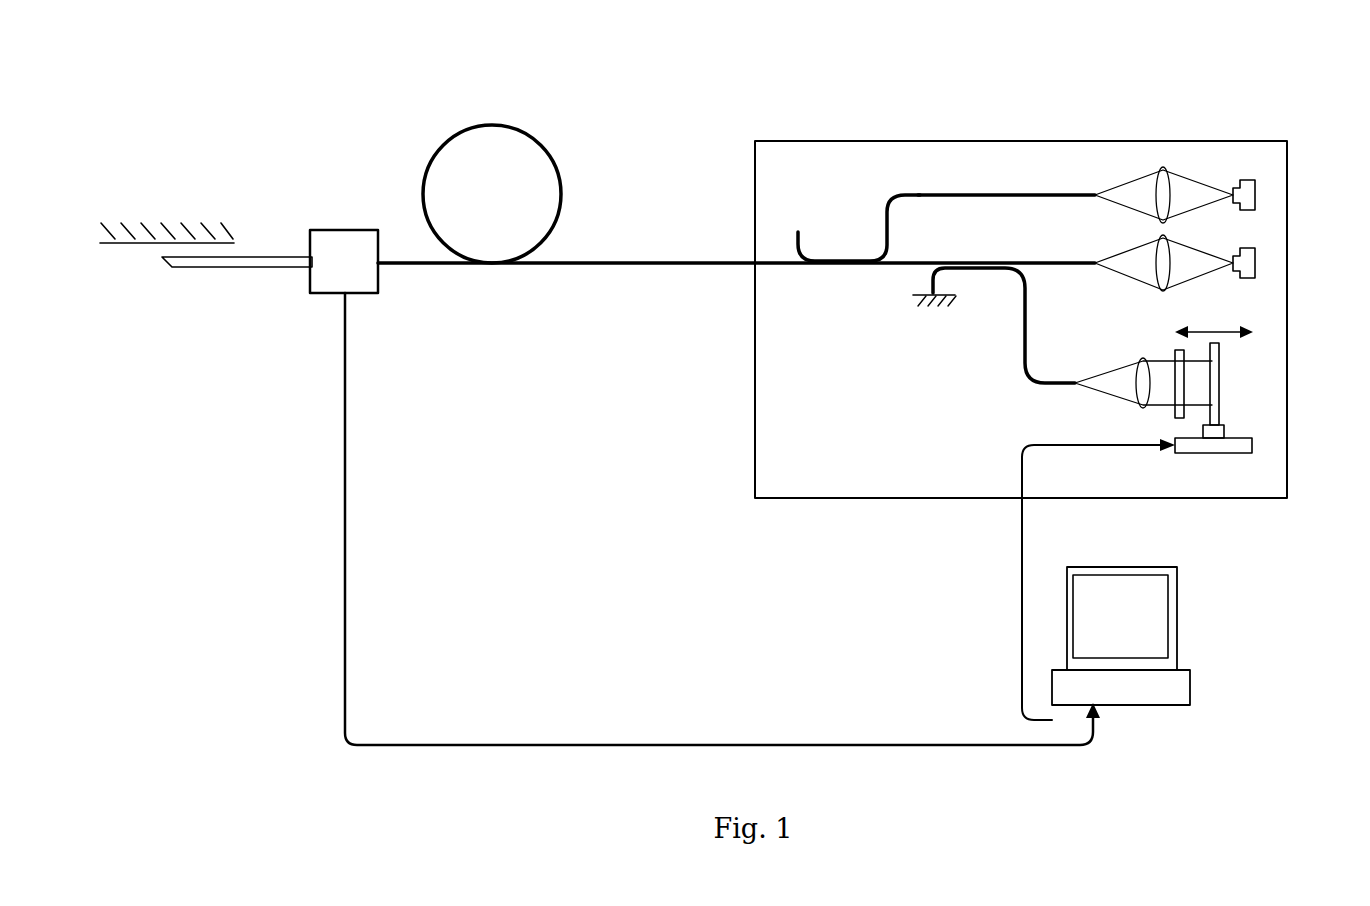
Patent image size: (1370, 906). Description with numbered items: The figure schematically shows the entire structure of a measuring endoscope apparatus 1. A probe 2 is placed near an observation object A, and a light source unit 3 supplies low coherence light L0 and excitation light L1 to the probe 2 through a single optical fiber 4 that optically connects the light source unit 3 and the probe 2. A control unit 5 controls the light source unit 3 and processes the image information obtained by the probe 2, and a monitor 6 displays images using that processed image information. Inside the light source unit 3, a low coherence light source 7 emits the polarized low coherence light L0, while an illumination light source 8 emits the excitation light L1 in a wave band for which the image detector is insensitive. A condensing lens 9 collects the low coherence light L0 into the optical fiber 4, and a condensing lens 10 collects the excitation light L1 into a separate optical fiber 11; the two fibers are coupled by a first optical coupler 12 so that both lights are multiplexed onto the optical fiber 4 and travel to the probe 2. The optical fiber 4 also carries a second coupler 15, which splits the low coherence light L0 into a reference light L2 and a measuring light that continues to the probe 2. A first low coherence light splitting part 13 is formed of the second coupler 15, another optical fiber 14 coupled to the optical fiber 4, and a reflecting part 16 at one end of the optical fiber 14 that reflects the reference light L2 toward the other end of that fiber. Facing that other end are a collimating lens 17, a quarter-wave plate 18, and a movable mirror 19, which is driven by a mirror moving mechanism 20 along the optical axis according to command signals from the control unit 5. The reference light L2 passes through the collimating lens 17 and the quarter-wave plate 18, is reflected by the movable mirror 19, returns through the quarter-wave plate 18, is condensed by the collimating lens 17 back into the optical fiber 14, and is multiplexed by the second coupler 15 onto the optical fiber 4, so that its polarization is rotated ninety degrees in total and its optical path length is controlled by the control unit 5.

The measuring endoscope apparatus 1 is at (782, 66).
The probe 2 is at (258, 268).
The light source unit 3 is at (1046, 140).
The optical fiber 4 is at (640, 266).
The control unit 5 is at (1157, 696).
The monitor 6 is at (1177, 606).
The low coherence light source 7 is at (1250, 266).
The illumination light source 8 is at (1246, 180).
The condensing lens 9 is at (1160, 242).
The condensing lens 10 is at (1165, 170).
The optical fiber 11 is at (960, 193).
The first optical coupler 12 is at (839, 196).
The first low coherence light splitting part 13 is at (888, 384).
The optical fiber 14 is at (1028, 331).
The second coupler 15 is at (982, 308).
The reflecting part 16 is at (912, 297).
The collimating lens 17 is at (1140, 406).
The quarter-wave plate 18 is at (1175, 354).
The movable mirror 19 is at (1219, 380).
The mirror moving mechanism 20 is at (1252, 446).
The observation object A is at (234, 244).
The excitation light L1 is at (1135, 185).
The low coherence light L0 is at (1125, 253).
The reference light L2 is at (1112, 397).